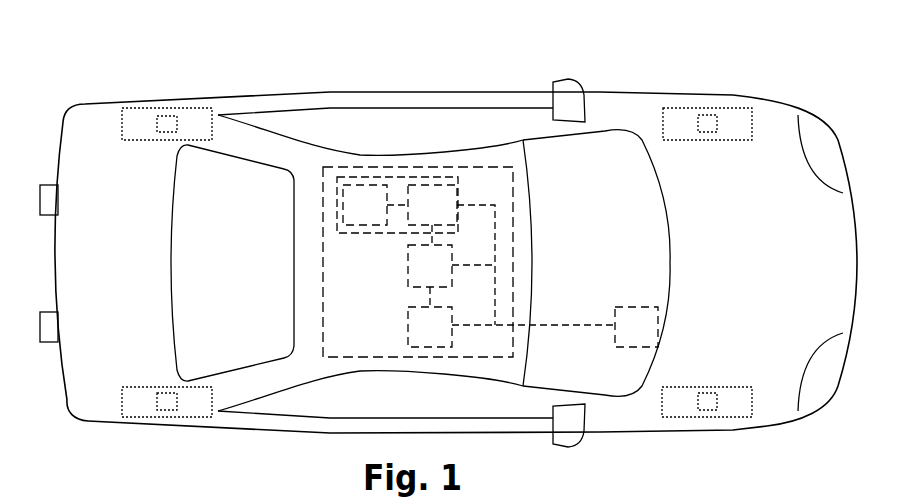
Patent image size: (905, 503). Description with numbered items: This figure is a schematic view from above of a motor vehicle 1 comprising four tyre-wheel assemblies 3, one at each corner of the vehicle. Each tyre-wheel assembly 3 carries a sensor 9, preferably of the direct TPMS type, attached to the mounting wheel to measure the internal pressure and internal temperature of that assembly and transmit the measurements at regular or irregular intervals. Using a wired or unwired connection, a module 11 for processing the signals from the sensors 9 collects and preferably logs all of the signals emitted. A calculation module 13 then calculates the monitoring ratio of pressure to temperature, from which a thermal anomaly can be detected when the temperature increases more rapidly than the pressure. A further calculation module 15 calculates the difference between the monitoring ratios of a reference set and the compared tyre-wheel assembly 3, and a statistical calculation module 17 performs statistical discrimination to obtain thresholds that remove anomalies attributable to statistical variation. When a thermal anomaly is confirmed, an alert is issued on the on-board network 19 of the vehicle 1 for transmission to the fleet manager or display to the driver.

The motor vehicle 1 is at (795, 42).
The tyre-wheel assembly 3 is at (200, 105).
The sensor 9 is at (167, 120).
The module for processing the signals 11 is at (365, 205).
The calculation module 13 is at (432, 205).
The calculation module 15 is at (430, 266).
The statistical calculation module 17 is at (430, 327).
The on-board network 19 is at (636, 327).